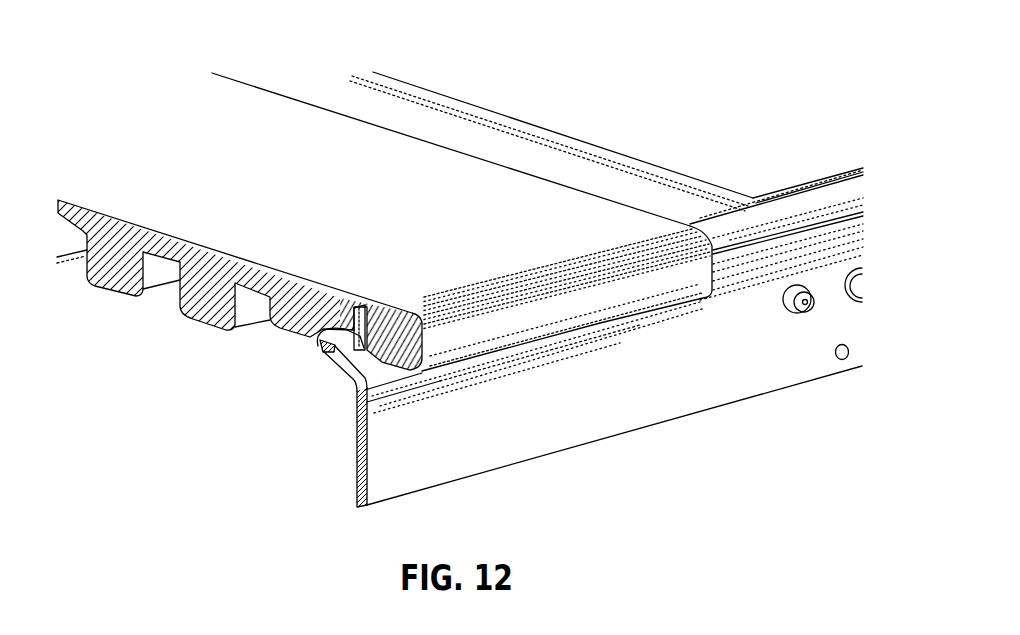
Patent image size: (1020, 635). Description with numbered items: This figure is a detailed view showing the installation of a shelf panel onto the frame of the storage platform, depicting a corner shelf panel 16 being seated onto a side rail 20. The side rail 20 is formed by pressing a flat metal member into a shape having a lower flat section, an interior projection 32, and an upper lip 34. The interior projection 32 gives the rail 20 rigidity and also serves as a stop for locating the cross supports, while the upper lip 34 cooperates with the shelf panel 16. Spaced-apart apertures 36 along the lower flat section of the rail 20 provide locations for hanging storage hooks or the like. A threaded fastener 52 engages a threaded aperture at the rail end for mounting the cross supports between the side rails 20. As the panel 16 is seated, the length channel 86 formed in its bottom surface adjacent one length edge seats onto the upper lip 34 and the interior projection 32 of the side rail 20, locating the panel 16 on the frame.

The corner shelf panel 16 is at (300, 134).
The side rail 20 is at (520, 440).
The interior projection 32 is at (334, 345).
The upper lip 34 is at (370, 330).
The aperture 36 is at (848, 360).
The threaded fastener 52 is at (787, 309).
The length channel 86 is at (352, 325).